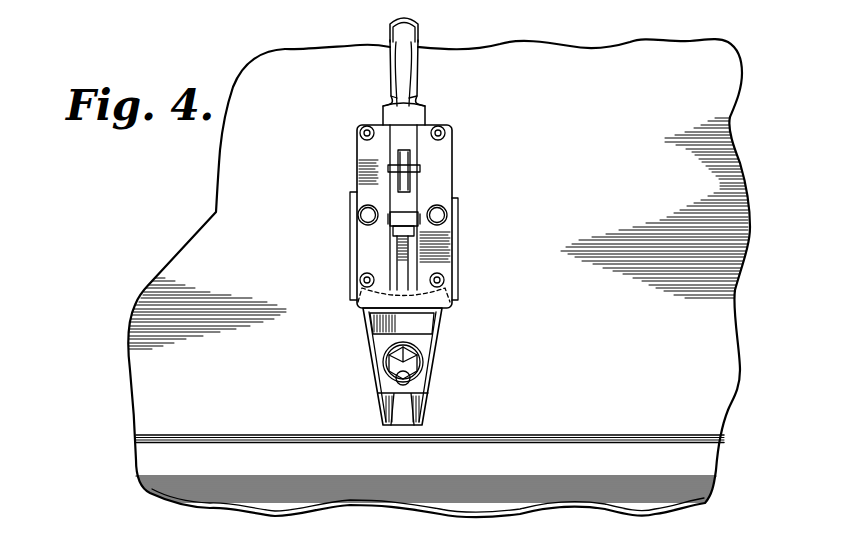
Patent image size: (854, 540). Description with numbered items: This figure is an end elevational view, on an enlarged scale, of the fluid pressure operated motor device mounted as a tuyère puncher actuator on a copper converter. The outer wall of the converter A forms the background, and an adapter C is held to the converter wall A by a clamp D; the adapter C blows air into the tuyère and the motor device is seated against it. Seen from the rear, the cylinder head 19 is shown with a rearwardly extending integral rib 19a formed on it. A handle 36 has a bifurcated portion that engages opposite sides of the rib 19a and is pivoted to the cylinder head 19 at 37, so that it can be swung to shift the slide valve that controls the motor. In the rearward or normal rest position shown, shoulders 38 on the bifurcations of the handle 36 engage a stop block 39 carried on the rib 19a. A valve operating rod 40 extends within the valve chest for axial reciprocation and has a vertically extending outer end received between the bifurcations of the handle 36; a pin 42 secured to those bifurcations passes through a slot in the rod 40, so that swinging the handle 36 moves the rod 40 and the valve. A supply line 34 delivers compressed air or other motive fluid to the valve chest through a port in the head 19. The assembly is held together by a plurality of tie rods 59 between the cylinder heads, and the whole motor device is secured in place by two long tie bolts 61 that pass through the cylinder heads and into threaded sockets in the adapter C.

The outer wall of the converter A is at (439, 278).
The adapter C is at (455, 304).
The clamp D is at (428, 360).
The head 19 is at (372, 257).
The rib 19a is at (453, 242).
The line 34 is at (391, 33).
The handle 36 is at (405, 68).
The pivot 37 is at (398, 229).
The shoulders 38 is at (415, 217).
The stop block 39 is at (401, 231).
The valve operating rod 40 is at (407, 158).
The pin 42 is at (421, 168).
The tie rods 59 is at (360, 133).
The tie bolts 61 is at (360, 212).